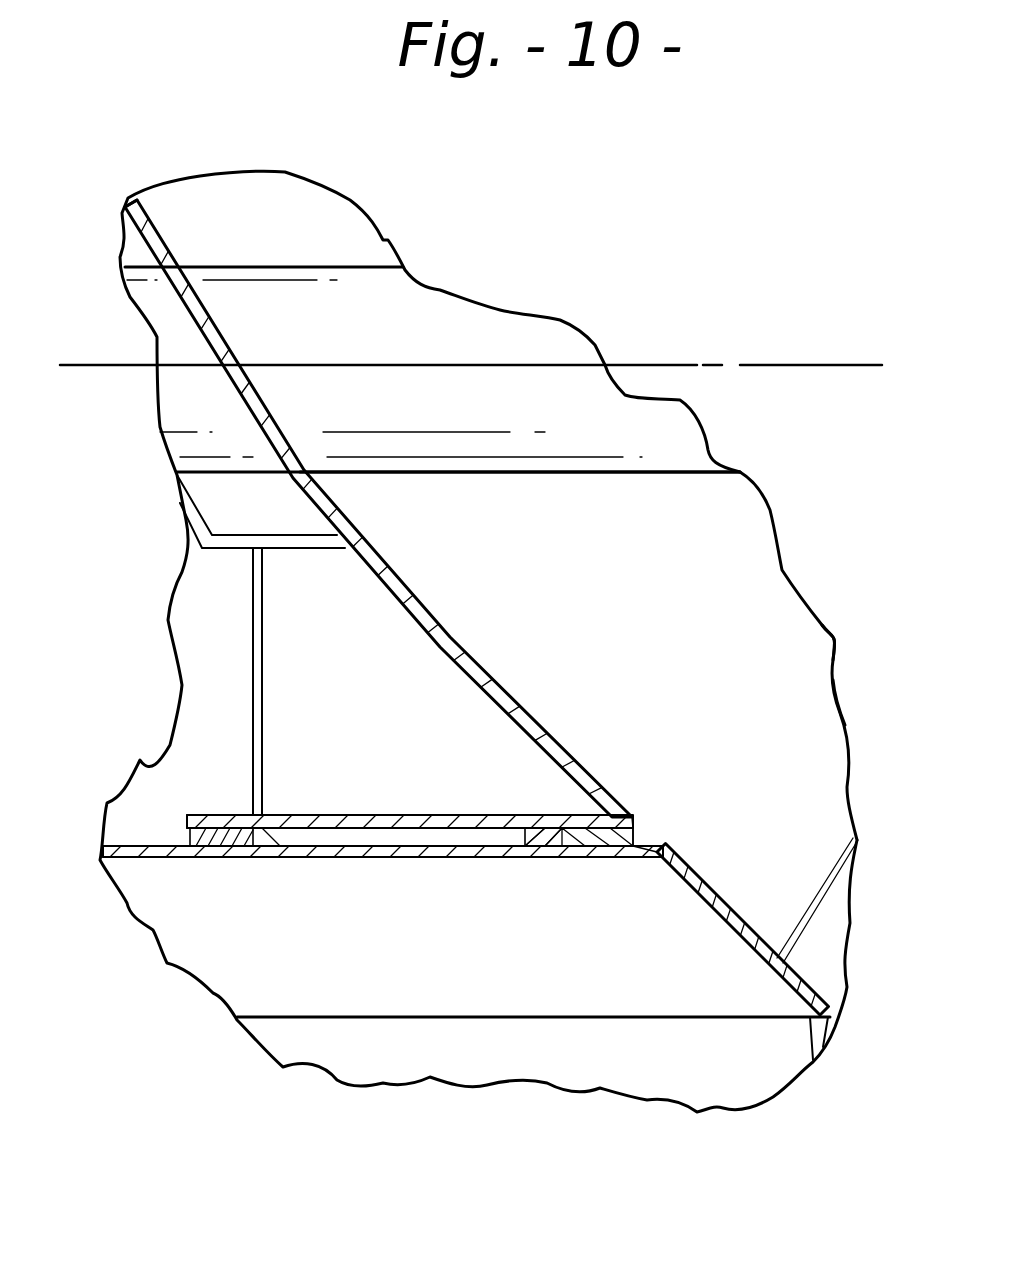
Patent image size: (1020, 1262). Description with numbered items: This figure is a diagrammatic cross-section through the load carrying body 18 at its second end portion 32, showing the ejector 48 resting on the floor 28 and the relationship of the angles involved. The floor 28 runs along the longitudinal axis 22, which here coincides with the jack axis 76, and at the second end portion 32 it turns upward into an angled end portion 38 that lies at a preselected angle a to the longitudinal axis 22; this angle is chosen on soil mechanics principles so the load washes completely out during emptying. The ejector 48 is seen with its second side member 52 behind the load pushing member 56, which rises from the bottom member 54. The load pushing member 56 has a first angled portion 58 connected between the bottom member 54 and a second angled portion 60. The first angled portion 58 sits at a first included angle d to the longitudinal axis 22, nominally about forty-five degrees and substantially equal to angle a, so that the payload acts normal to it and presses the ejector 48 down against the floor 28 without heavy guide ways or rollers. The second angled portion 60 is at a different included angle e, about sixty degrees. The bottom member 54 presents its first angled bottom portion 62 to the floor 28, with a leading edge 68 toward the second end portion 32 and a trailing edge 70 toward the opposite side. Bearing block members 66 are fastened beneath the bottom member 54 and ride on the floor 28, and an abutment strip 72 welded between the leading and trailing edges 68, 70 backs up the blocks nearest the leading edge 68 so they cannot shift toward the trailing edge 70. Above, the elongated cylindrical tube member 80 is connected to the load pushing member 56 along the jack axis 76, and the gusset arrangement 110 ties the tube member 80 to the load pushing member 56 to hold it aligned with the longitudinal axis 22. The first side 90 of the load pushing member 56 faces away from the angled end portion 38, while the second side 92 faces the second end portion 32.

The load carrying body 18 is at (178, 978).
The longitudinal axis 22 is at (471, 336).
The jack axis 76 is at (653, 363).
The floor 28 is at (104, 822).
The second end portion 32 is at (397, 968).
The angled end portion 38 is at (717, 894).
The ejector 48 is at (132, 243).
The second side member 52 is at (641, 608).
The bottom member 54 is at (408, 850).
The load pushing member 56 is at (351, 503).
The first angled portion 58 is at (570, 735).
The second angled portion 60 is at (379, 508).
The first angled bottom portion 62 is at (320, 832).
The bearing block members 66 is at (218, 842).
The leading edge 68 is at (640, 822).
The trailing edge 70 is at (187, 822).
The abutment strip 72 is at (540, 848).
The cylindrical tube member 80 is at (480, 473).
The first side 90 is at (810, 715).
The second side 92 is at (172, 599).
The gusset arrangement 110 is at (826, 657).
The first predetermined included angle d is at (603, 372).
The preselected angle a is at (862, 372).
The second predetermined included angle e is at (337, 374).